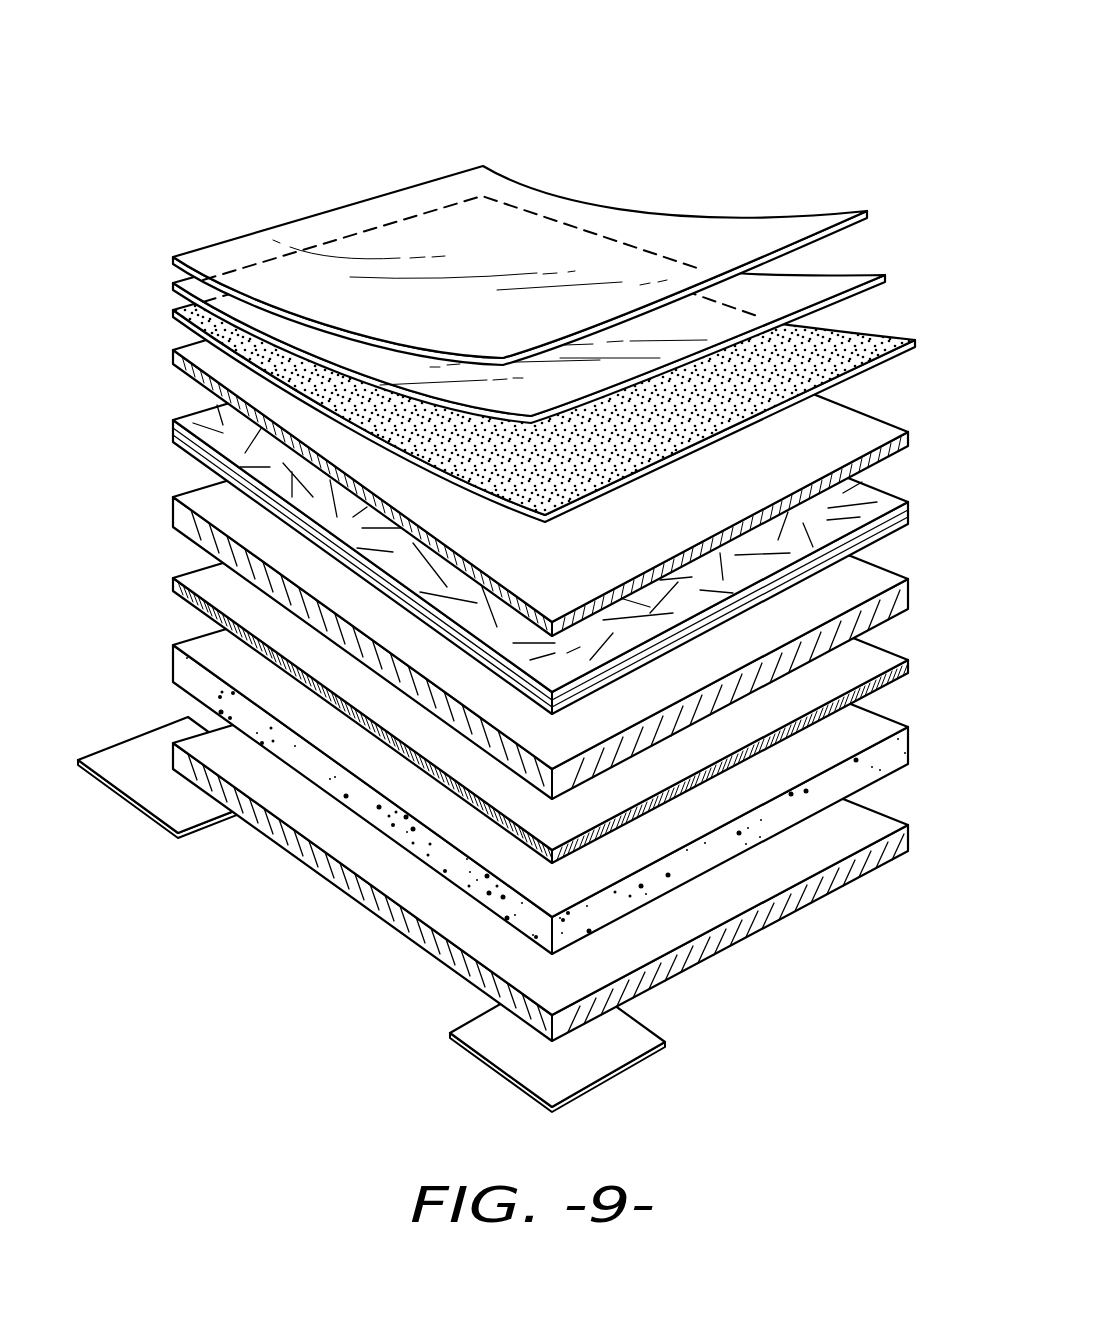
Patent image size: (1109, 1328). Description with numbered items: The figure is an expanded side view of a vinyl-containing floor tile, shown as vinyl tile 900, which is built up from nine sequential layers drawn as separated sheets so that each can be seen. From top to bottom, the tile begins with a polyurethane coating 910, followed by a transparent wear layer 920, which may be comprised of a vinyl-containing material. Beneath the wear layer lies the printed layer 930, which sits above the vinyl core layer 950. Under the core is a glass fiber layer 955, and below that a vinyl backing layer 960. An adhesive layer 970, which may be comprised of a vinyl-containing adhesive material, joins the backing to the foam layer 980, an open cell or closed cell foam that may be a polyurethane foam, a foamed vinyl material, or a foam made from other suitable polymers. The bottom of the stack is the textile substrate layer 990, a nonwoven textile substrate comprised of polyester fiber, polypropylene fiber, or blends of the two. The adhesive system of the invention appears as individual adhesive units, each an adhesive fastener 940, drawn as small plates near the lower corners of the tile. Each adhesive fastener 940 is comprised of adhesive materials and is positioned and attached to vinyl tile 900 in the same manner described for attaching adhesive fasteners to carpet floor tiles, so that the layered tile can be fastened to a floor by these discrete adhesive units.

The vinyl tile 900 is at (524, 569).
The polyurethane coating 910 is at (867, 212).
The transparent wear layer 920 is at (885, 275).
The printed layer 930 is at (915, 340).
The adhesive fastener 940 is at (157, 818).
The vinyl core layer 950 is at (908, 433).
The glass fiber layer 955 is at (908, 501).
The vinyl backing layer 960 is at (908, 580).
The adhesive layer 970 is at (908, 660).
The foam layer 980 is at (908, 728).
The textile substrate layer 990 is at (908, 825).